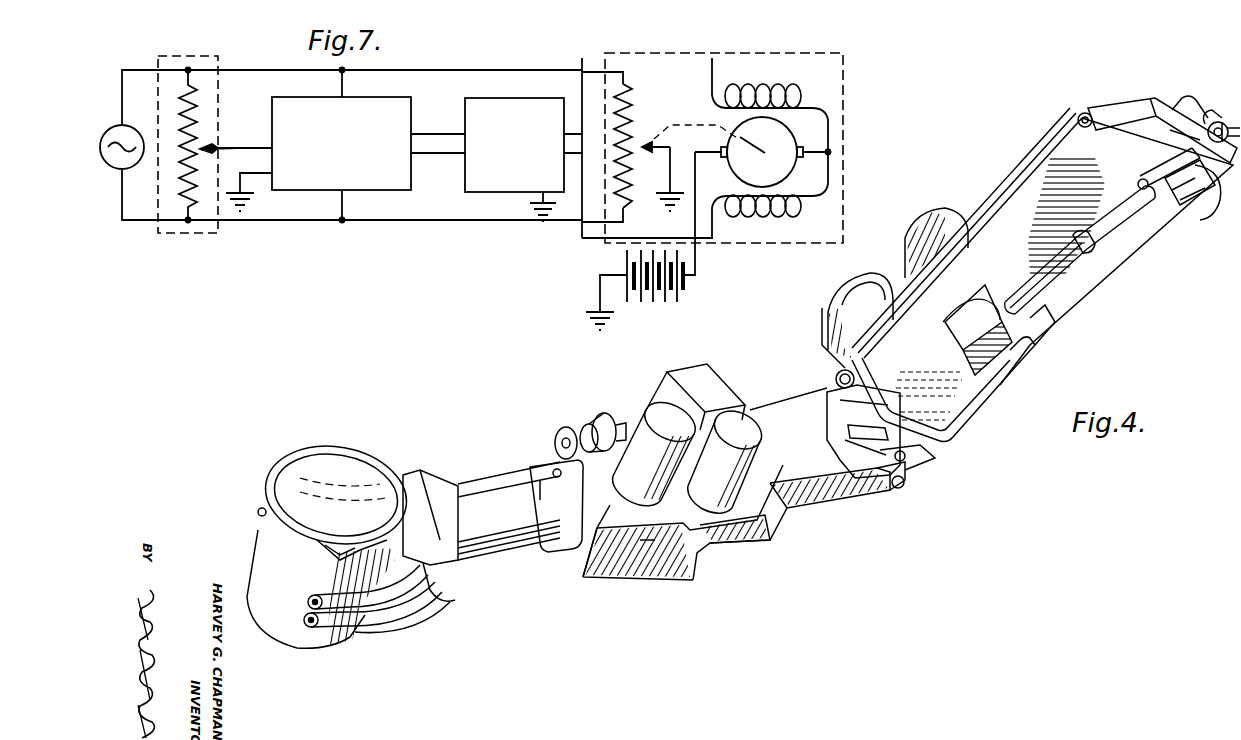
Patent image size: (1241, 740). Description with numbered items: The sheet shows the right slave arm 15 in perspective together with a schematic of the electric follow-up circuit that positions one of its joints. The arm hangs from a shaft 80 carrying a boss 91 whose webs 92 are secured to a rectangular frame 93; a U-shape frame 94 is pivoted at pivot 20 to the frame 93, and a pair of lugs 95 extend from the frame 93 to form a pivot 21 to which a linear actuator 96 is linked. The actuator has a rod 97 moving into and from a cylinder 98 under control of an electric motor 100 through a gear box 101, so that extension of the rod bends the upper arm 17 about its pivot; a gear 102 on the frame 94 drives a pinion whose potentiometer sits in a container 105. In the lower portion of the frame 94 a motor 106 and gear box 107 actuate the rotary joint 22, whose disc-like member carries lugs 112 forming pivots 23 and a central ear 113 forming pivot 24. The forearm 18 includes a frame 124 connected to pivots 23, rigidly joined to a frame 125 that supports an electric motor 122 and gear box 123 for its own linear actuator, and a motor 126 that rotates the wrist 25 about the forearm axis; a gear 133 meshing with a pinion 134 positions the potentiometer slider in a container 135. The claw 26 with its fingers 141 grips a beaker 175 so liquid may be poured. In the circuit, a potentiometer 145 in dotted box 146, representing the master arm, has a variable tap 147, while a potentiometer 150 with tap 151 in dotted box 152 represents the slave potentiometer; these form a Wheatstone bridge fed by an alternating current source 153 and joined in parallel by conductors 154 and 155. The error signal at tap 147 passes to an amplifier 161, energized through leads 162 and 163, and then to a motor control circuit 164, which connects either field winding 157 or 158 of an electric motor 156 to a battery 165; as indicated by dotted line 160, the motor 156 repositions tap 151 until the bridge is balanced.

In FIG. 7, the alternating current source 153 is at (113, 125).
In FIG. 7, the potentiometer 145 is at (180, 185).
In FIG. 7, the dotted box 146 is at (204, 236).
In FIG. 7, the variable tap 147 is at (210, 150).
In FIG. 7, the conductor 155 is at (432, 70).
In FIG. 7, the conductor 154 is at (432, 220).
In FIG. 7, the amplifier 161 is at (406, 105).
In FIG. 7, the lead 162 is at (342, 74).
In FIG. 7, the lead 163 is at (342, 218).
In FIG. 7, the motor control circuit 164 is at (516, 98).
In FIG. 7, the dotted box 152 is at (847, 95).
In FIG. 7, the potentiometer 150 is at (630, 100).
In FIG. 7, the variable tap 151 is at (642, 150).
In FIG. 7, the dotted line 160 is at (706, 114).
In FIG. 7, the electric motor 156 is at (790, 128).
In FIG. 7, the field winding 157 is at (770, 88).
In FIG. 7, the field winding 158 is at (775, 212).
In FIG. 7, the battery 165 is at (686, 280).
In FIG. 4, the right slave arm 15 is at (828, 523).
In FIG. 4, the forearm 17 is at (1090, 265).
In FIG. 4, the forearm 18 is at (551, 429).
In FIG. 4, the pivot 20 is at (1078, 116).
In FIG. 4, the pivot 21 is at (1138, 183).
In FIG. 4, the rotary joint 22 is at (920, 462).
In FIG. 4, the pivot 23 is at (838, 383).
In FIG. 4, the pivot 24 is at (862, 450).
In FIG. 4, the wrist 25 is at (505, 545).
In FIG. 4, the claw 26 is at (392, 632).
In FIG. 4, the shaft 80 is at (1233, 125).
In FIG. 4, the boss 91 is at (1210, 115).
In FIG. 4, the web 92 is at (1182, 112).
In FIG. 4, the rectangular frame 93 is at (1112, 106).
In FIG. 4, the U-shape frame 94 is at (1010, 182).
In FIG. 4, the lug 95 is at (1153, 162).
In FIG. 4, the linear actuator 96 is at (1033, 332).
In FIG. 4, the rod 97 is at (1110, 222).
In FIG. 4, the cylinder 98 is at (1050, 295).
In FIG. 4, the electric motor 100 is at (927, 225).
In FIG. 4, the gear box 101 is at (1000, 352).
In FIG. 4, the gear 102 is at (1185, 200).
In FIG. 4, the container 105 is at (1215, 210).
In FIG. 4, the motor 106 is at (870, 280).
In FIG. 4, the gear box 107 is at (934, 409).
In FIG. 4, the lug 112 is at (845, 373).
In FIG. 4, the ear 113 is at (850, 430).
In FIG. 4, the electric motor 122 is at (732, 532).
In FIG. 4, the gear box 123 is at (704, 365).
In FIG. 4, the frame 124 is at (850, 492).
In FIG. 4, the frame 125 is at (622, 578).
In FIG. 4, the motor 126 is at (642, 412).
In FIG. 4, the gear 133 is at (542, 460).
In FIG. 4, the pinion 134 is at (570, 428).
In FIG. 4, the container 135 is at (600, 415).
In FIG. 4, the finger 141 is at (337, 450).
In FIG. 4, the beaker 175 is at (260, 548).